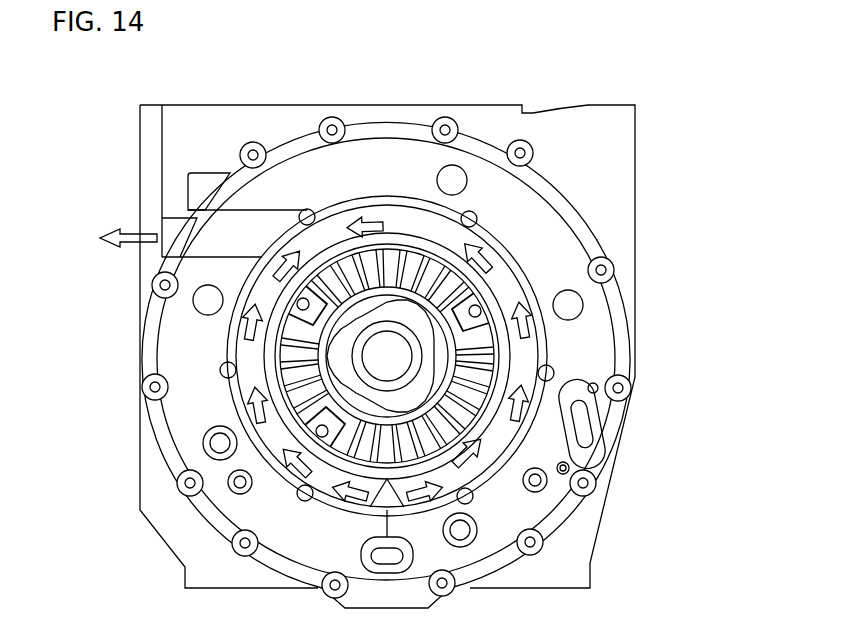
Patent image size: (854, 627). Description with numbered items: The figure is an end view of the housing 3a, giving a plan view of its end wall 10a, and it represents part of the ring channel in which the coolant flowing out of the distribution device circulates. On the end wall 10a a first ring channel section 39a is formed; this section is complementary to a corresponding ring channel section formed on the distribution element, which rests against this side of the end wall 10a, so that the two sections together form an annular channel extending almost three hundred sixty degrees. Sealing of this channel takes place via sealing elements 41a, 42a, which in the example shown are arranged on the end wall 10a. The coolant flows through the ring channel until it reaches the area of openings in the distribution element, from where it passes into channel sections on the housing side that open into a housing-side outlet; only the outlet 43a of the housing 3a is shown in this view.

The housing 3a is at (612, 106).
The end wall 10a is at (530, 216).
The first ring channel section 39a is at (505, 297).
The sealing element 41a is at (552, 338).
The sealing element 42a is at (497, 390).
The outlet 43a is at (172, 235).